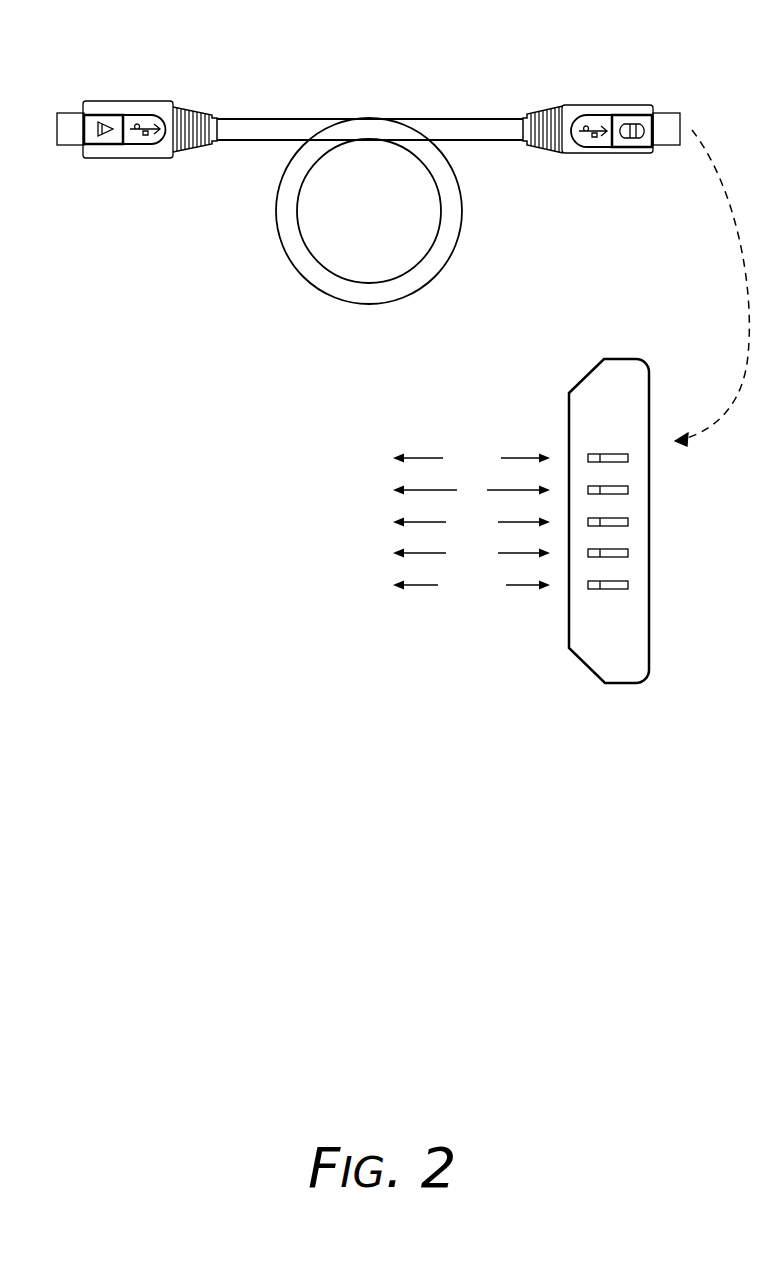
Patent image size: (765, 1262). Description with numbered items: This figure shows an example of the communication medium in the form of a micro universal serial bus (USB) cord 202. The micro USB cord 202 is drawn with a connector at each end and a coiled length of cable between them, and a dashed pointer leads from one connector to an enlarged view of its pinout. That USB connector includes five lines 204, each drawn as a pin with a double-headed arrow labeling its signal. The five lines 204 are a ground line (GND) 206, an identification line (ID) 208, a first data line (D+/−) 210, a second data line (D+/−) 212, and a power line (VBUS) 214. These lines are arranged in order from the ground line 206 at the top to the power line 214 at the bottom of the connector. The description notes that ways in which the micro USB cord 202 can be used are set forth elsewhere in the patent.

The micro universal serial bus (USB) cord 202 is at (110, 52).
The five lines 204 is at (423, 631).
The ground line (GND) 206 is at (628, 460).
The identification line (ID) 208 is at (628, 492).
The first data line (D+/−) 210 is at (628, 524).
The second data line (D+/−) 212 is at (628, 555).
The power line (VBUS) 214 is at (628, 587).